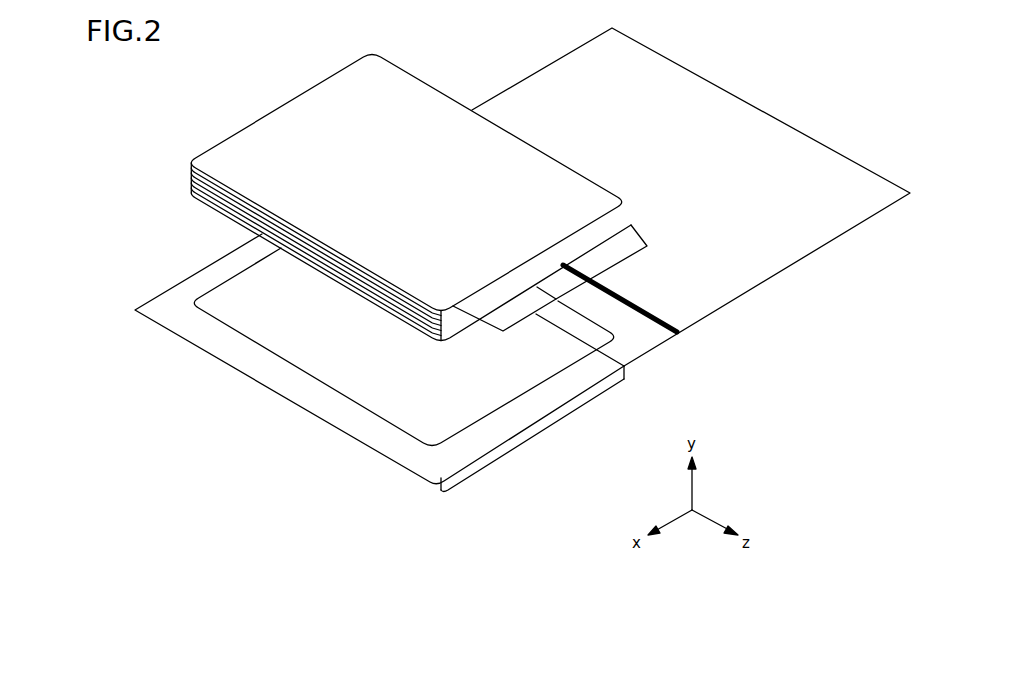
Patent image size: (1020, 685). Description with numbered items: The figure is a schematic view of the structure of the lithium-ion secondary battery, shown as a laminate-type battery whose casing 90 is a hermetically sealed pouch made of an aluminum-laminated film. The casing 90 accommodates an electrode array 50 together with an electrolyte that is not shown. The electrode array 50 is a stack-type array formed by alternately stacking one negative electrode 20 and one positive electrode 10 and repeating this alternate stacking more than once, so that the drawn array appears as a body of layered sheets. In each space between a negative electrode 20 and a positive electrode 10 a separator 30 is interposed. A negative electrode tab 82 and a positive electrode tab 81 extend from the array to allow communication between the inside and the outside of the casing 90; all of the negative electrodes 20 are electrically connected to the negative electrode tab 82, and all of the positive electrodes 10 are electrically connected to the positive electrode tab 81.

The positive electrode 10 is at (381, 262).
The negative electrode 20 is at (190, 172).
The separator 30 is at (190, 181).
The electrode array 50 is at (364, 198).
The positive electrode tab 81 is at (635, 253).
The negative electrode tab 82 is at (532, 316).
The casing 90 is at (767, 119).